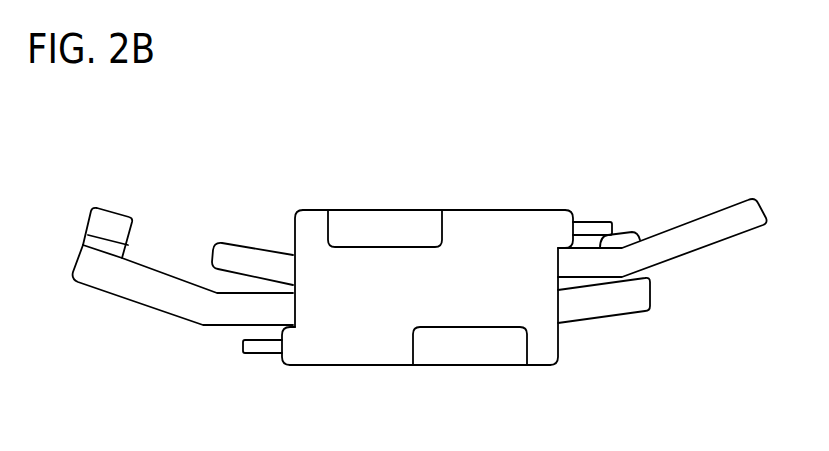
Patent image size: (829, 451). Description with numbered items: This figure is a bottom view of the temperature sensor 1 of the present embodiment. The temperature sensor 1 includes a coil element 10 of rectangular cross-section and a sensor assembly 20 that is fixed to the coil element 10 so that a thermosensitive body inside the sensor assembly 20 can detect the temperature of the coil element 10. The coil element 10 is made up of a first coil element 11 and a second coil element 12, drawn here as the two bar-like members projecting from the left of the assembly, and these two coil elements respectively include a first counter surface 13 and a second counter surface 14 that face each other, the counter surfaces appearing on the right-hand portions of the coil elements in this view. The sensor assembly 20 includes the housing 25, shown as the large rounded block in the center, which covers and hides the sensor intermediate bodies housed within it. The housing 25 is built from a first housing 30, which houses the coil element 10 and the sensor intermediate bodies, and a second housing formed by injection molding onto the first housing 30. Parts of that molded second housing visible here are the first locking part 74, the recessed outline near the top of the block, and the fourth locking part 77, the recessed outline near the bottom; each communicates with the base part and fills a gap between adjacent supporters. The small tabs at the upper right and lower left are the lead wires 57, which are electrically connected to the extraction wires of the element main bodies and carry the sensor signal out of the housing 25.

The temperature sensor 1 is at (549, 156).
The coil element 10 is at (175, 166).
The first coil element 11 is at (242, 243).
The second coil element 12 is at (185, 282).
The first counter surface 13 is at (588, 285).
The second counter surface 14 is at (565, 290).
The sensor assembly 20 is at (460, 209).
The housing 25 is at (495, 209).
The first housing 30 is at (373, 367).
The lead wire 57 is at (592, 221).
The first locking part 74 is at (378, 209).
The fourth locking part 77 is at (477, 367).